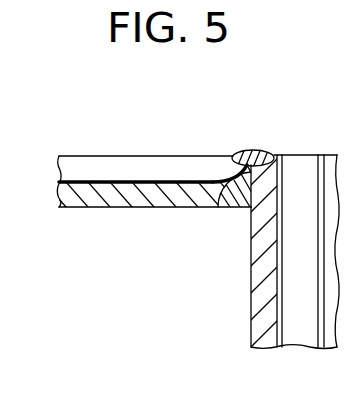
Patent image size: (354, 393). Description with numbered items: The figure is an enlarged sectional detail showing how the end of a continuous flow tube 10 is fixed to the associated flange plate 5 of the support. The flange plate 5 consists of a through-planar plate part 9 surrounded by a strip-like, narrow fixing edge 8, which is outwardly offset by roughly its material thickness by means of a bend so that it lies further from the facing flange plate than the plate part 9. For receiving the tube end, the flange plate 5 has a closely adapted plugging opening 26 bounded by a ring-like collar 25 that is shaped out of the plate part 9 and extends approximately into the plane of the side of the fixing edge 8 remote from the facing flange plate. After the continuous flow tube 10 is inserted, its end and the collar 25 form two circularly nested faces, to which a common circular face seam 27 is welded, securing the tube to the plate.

The flange plate 5 is at (158, 118).
The fixing edge 8 is at (82, 162).
The plate part 9 is at (118, 204).
The continuous flow tube 10 is at (267, 264).
The collar 25 is at (228, 168).
The plugging opening 26 is at (252, 174).
The face seam 27 is at (250, 150).